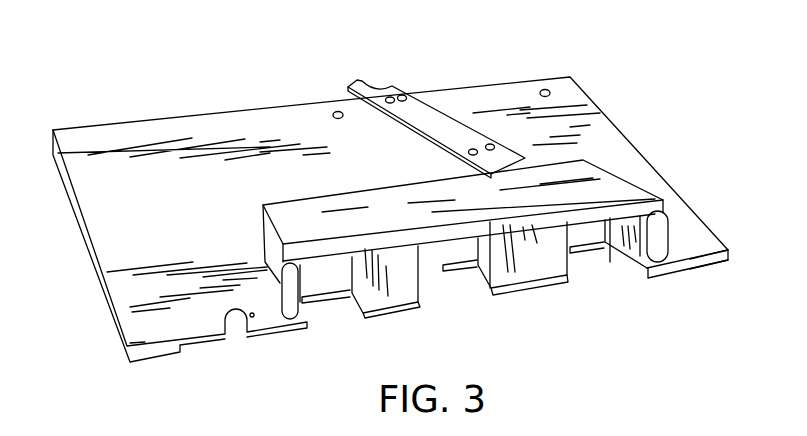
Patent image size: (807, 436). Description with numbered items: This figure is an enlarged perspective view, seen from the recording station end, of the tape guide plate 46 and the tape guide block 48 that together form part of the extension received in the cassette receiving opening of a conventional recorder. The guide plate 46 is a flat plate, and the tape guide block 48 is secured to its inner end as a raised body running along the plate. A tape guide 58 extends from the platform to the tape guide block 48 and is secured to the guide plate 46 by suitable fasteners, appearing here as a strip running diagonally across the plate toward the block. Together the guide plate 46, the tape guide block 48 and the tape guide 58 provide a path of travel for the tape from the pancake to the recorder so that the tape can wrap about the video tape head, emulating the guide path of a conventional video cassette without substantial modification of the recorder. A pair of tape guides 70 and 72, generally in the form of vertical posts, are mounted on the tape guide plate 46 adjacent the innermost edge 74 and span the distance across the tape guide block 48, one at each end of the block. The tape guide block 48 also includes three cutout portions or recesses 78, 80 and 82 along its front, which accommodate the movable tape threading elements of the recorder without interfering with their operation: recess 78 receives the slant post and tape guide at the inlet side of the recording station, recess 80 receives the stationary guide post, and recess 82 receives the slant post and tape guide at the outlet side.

The guide plate 46 is at (131, 244).
The tape guide 58 is at (428, 113).
The tape guide block 48 is at (597, 183).
The tape guide 70 is at (668, 230).
The tape guide 72 is at (283, 298).
The innermost edge 74 is at (686, 266).
The recess 78 is at (583, 245).
The recess 80 is at (446, 248).
The recess 82 is at (328, 270).